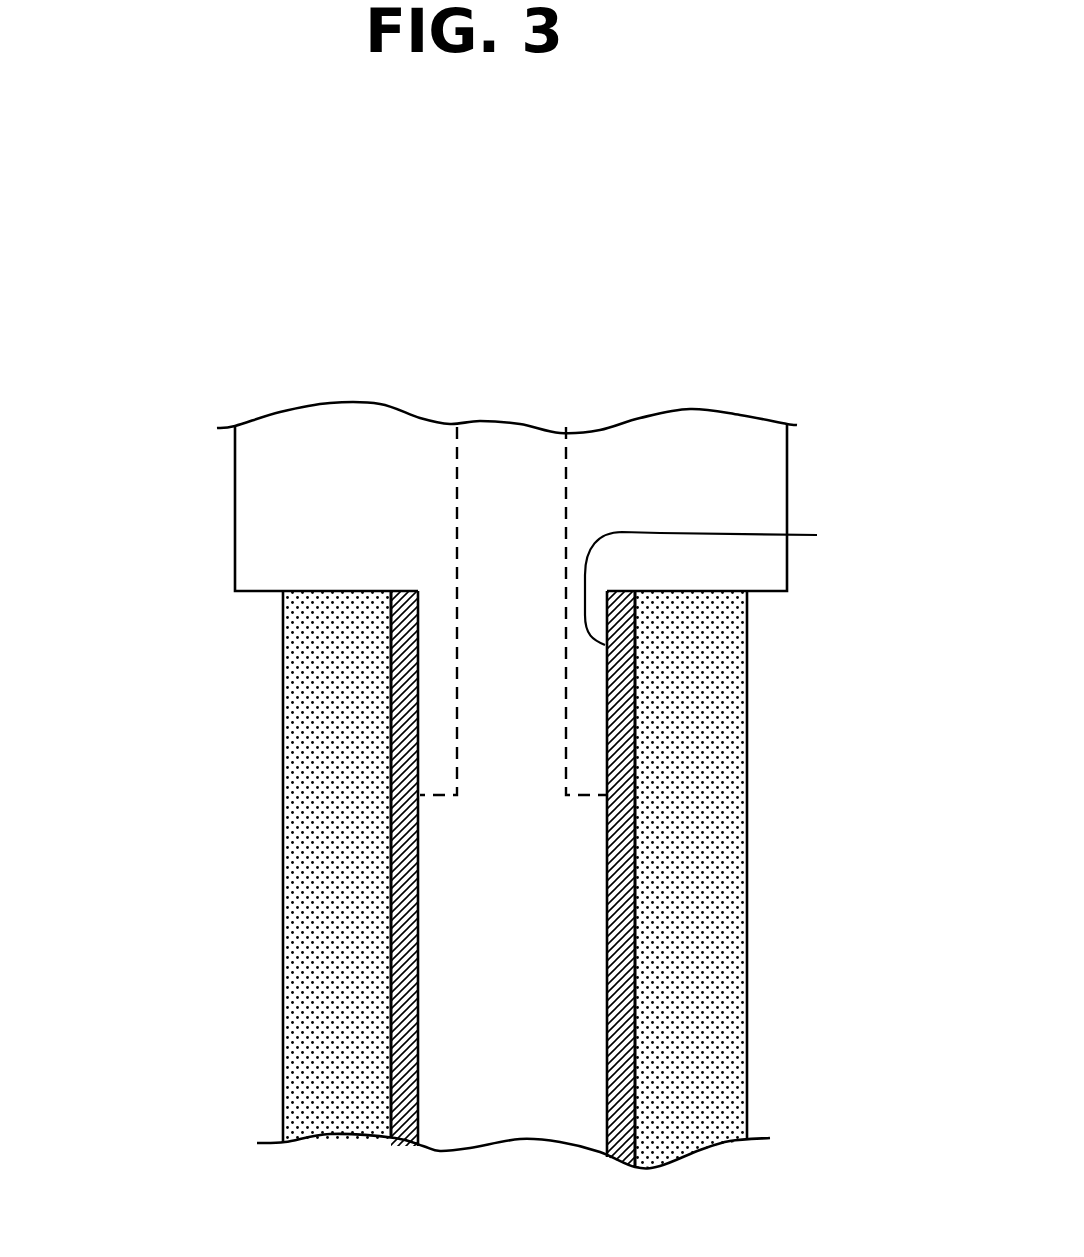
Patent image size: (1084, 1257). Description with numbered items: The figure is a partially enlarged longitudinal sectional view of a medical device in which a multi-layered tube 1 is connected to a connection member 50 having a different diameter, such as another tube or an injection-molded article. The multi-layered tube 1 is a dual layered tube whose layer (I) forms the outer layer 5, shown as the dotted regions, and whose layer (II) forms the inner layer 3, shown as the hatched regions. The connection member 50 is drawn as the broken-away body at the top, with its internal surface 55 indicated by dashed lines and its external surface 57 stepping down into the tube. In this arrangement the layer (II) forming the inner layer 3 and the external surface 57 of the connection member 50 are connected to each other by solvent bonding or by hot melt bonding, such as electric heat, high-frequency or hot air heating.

The multi-layered tube 1 is at (494, 879).
The inner layer 3 is at (623, 833).
The outer layer 5 is at (690, 998).
The connection member 50 is at (745, 397).
The internal surface of the connection member 55 is at (563, 478).
The external surface of the connection member 57 is at (727, 581).